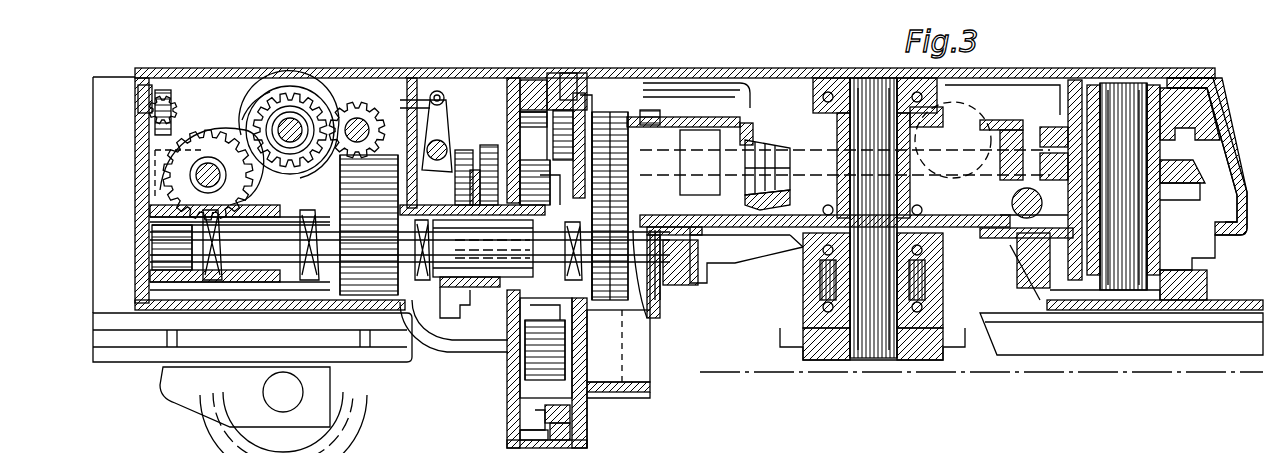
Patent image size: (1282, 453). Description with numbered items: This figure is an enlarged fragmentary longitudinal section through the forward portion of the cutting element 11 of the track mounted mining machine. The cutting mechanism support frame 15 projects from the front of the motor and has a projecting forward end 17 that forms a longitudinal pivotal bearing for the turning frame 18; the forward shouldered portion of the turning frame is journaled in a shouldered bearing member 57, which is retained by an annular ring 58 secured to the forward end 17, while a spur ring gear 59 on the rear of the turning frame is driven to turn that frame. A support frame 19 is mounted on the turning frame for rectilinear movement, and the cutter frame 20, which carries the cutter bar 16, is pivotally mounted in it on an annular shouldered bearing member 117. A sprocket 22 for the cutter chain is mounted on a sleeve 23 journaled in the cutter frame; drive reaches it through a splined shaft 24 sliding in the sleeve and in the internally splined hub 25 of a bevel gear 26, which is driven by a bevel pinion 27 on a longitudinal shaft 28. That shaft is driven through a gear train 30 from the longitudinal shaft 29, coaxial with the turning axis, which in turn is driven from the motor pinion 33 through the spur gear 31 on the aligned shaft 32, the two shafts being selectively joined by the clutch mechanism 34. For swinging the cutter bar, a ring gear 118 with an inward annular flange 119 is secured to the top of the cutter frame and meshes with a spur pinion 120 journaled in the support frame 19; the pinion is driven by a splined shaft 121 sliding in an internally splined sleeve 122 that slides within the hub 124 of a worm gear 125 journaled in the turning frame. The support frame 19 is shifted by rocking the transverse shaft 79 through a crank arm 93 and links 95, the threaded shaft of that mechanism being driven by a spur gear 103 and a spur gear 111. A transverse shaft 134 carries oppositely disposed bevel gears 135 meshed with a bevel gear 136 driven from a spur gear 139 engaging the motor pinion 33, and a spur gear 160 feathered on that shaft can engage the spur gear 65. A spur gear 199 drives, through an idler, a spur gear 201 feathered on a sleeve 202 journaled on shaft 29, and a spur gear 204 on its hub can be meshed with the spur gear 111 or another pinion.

The cutting element 11 is at (425, 75).
The support frame 15 is at (360, 395).
The cutter bar 16 is at (140, 360).
The projecting forward end 17 is at (520, 395).
The turning frame 18 is at (605, 392).
The support frame 19 is at (655, 345).
The cutter frame 20 is at (712, 283).
The sprocket 22 is at (800, 340).
The sleeve 23 is at (838, 360).
The splined shaft 24 is at (872, 358).
The internally splined hub 25 is at (950, 118).
The bevel gear 26 is at (990, 118).
The bevel pinion 27 is at (768, 140).
The longitudinally extending shaft 28 is at (688, 105).
The longitudinally extending shaft 29 is at (475, 290).
The gear train 30 is at (605, 112).
The spur gear 31 is at (160, 290).
The shaft 32 is at (180, 247).
The pinion 33 is at (150, 209).
The clutch mechanism 34 is at (292, 290).
The shouldered bearing member 57 is at (560, 440).
The annular ring 58 is at (575, 73).
The spur ring gear 59 is at (533, 80).
The spur gear 65 is at (360, 110).
The transversely extending shaft 79 is at (1027, 218).
The crank arm 93 is at (1035, 120).
The links 95 is at (985, 85).
The spur gear 103 is at (642, 110).
The spur gear 111 is at (530, 170).
The annular shouldered bearing member 117 is at (660, 300).
The ring gear 118 is at (1055, 310).
The annular flange 119 is at (1000, 270).
The spur pinion 120 is at (1160, 313).
The splined shaft 121 is at (1130, 100).
The internally splined sleeve 122 is at (1180, 88).
The hub 124 is at (1200, 183).
The worm gear 125 is at (1200, 140).
The transversely extending shaft 134 is at (292, 110).
The bevel gears 135 is at (268, 95).
The bevel gear 136 is at (240, 100).
The spur gear 139 is at (163, 90).
The spur gear 160 is at (312, 105).
The spur gear 199 is at (490, 145).
The spur gear 201 is at (470, 318).
The sleeve 202 is at (460, 290).
The spur gear 204 is at (530, 345).